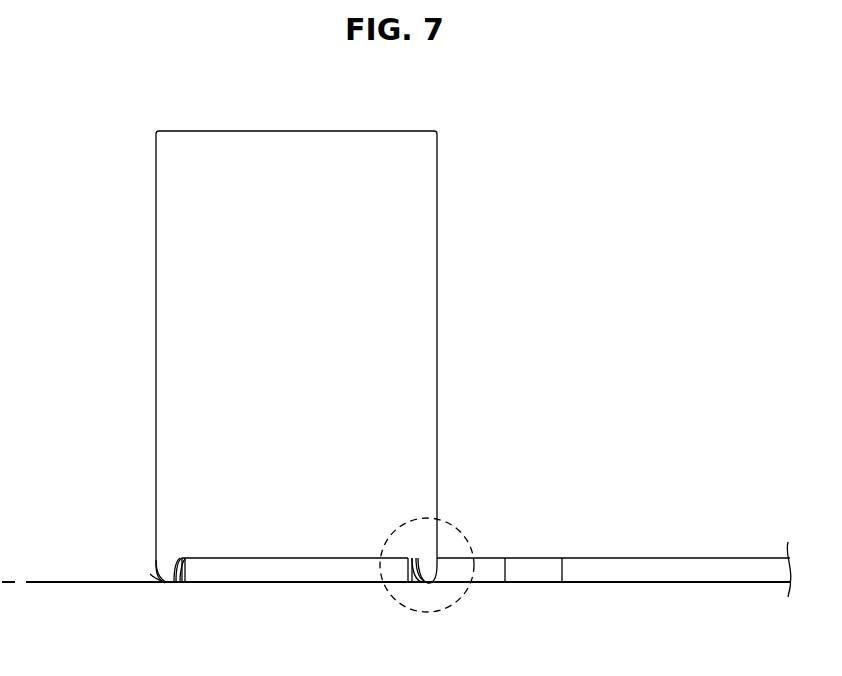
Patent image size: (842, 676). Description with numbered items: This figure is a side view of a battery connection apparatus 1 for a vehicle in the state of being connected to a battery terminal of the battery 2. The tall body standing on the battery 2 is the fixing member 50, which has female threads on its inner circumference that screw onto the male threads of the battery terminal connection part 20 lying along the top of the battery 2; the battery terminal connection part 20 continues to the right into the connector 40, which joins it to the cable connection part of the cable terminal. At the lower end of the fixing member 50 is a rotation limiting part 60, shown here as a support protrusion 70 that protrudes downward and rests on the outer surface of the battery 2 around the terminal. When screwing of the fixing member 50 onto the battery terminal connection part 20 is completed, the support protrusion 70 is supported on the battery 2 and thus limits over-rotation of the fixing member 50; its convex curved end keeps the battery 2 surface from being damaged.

The battery connection apparatus 1 is at (502, 343).
The battery 2 is at (52, 582).
The battery terminal connection part 20 is at (271, 582).
The connector 40 is at (657, 558).
The fixing member 50 is at (156, 300).
The rotation limiting part 60 is at (163, 582).
The support protrusion 70 is at (177, 609).